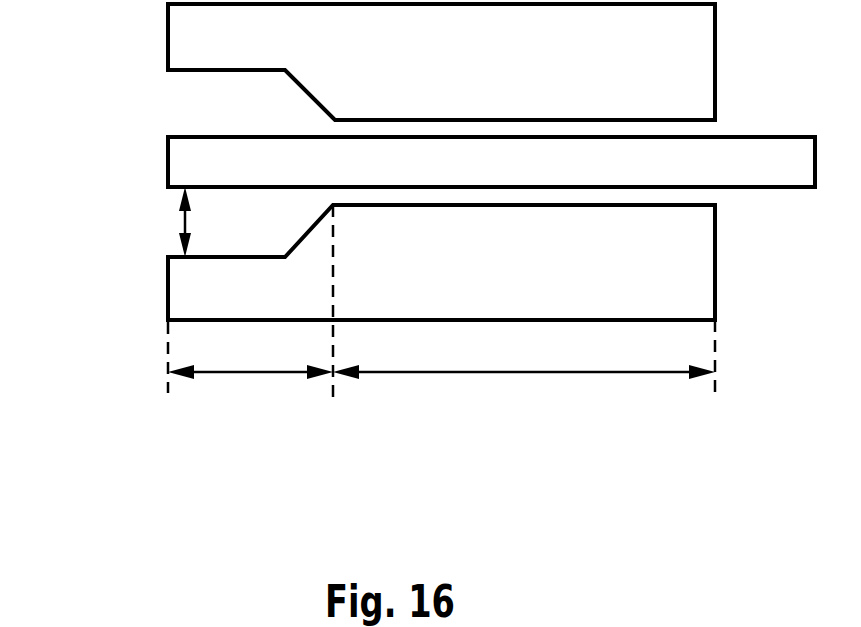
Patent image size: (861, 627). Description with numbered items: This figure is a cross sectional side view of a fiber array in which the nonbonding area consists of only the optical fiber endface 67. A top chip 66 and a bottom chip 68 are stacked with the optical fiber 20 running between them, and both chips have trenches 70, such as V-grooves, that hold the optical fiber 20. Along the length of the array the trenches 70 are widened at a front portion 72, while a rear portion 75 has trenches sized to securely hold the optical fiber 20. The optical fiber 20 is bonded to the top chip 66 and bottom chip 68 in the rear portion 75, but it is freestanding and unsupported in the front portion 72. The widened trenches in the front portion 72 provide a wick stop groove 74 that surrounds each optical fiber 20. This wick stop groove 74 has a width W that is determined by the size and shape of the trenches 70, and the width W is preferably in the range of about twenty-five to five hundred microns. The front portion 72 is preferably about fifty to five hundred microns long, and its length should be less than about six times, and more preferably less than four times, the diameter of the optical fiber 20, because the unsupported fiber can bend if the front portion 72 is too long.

The optical fiber 20 is at (670, 178).
The top chip 66 is at (491, 105).
The bottom chip 68 is at (536, 303).
The trenches 70 is at (658, 130).
The wick stop groove 74 is at (183, 104).
The optical fiber endface 67 is at (165, 165).
The width W is at (180, 220).
The front portion 72 is at (248, 372).
The rear portion 75 is at (533, 372).